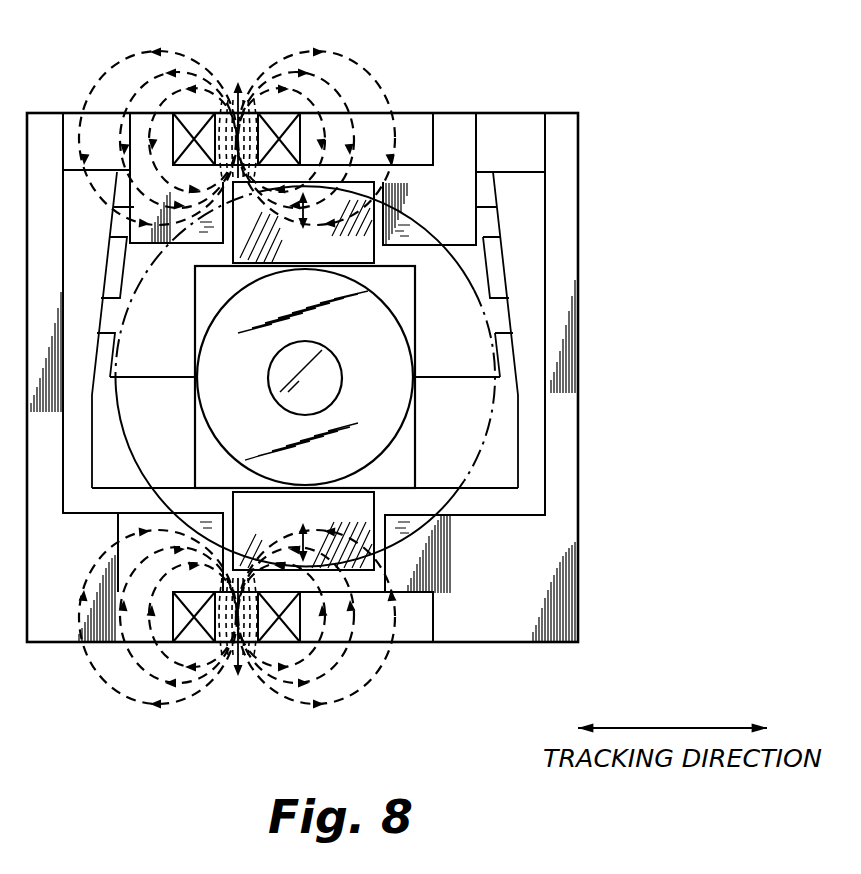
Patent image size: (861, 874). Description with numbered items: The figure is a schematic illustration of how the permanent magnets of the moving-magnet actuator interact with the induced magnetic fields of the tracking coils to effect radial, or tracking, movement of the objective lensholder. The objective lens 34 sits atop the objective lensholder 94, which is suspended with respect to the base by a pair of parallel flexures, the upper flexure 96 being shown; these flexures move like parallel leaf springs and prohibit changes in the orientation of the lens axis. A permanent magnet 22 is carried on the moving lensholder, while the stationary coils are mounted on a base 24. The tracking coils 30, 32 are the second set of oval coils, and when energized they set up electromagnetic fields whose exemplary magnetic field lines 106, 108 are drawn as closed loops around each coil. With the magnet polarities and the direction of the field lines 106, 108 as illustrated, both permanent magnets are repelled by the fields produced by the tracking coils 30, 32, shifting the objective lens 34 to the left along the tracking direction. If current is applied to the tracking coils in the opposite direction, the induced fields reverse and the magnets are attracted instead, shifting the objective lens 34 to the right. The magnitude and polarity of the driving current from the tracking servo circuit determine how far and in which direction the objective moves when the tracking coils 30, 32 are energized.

The permanent magnet 22 is at (370, 260).
The base 24 is at (272, 520).
The tracking coil 30 is at (193, 118).
The tracking coil 32 is at (250, 655).
The objective lens 34 is at (376, 366).
The objective lensholder 94 is at (408, 482).
The upper flexure 96 is at (498, 263).
The magnetic field lines 106 is at (115, 68).
The magnetic field lines 108 is at (118, 693).